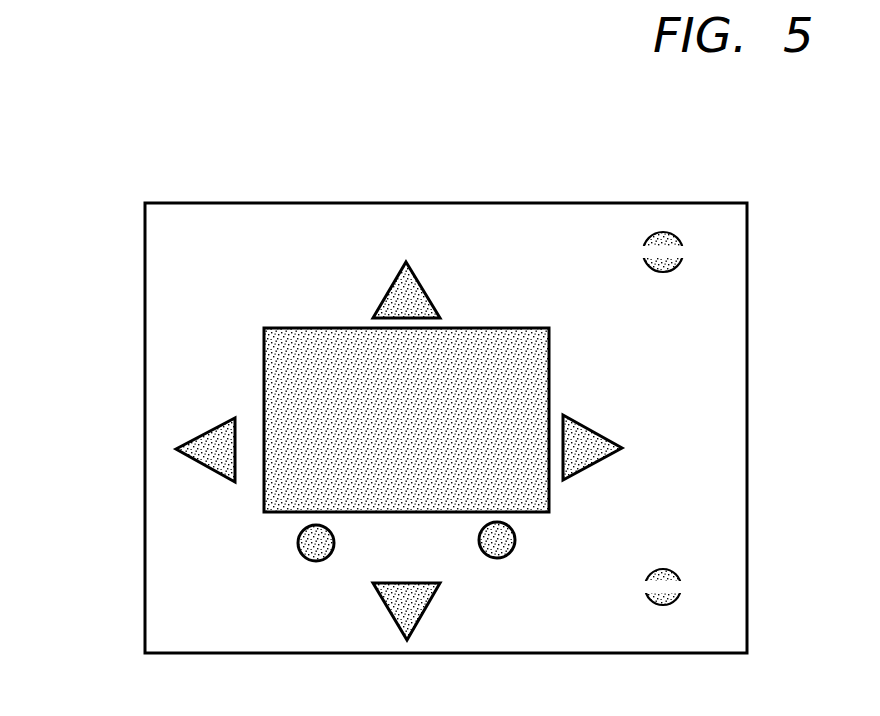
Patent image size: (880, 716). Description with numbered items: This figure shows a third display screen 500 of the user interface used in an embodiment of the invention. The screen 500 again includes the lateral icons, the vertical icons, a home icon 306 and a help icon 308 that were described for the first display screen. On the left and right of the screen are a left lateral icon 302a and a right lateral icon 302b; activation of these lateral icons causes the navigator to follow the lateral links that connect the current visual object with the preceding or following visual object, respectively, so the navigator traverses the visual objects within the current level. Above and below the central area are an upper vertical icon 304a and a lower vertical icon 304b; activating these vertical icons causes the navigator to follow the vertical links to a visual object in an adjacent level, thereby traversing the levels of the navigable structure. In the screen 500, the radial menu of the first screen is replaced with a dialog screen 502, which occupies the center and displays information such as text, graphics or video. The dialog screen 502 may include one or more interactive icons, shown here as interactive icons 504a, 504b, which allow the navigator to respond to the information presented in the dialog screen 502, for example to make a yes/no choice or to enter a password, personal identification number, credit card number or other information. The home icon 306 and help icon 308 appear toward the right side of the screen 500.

The third display screen 500 is at (155, 152).
The dialog screen 502 is at (264, 353).
The left lateral icon 302a is at (193, 435).
The right lateral icon 302b is at (590, 428).
The upper vertical icon 304a is at (388, 287).
The lower vertical icon 304b is at (422, 618).
The interactive icon 504a is at (323, 562).
The interactive icon 504b is at (508, 555).
The home icon 306 is at (670, 568).
The help icon 308 is at (667, 233).